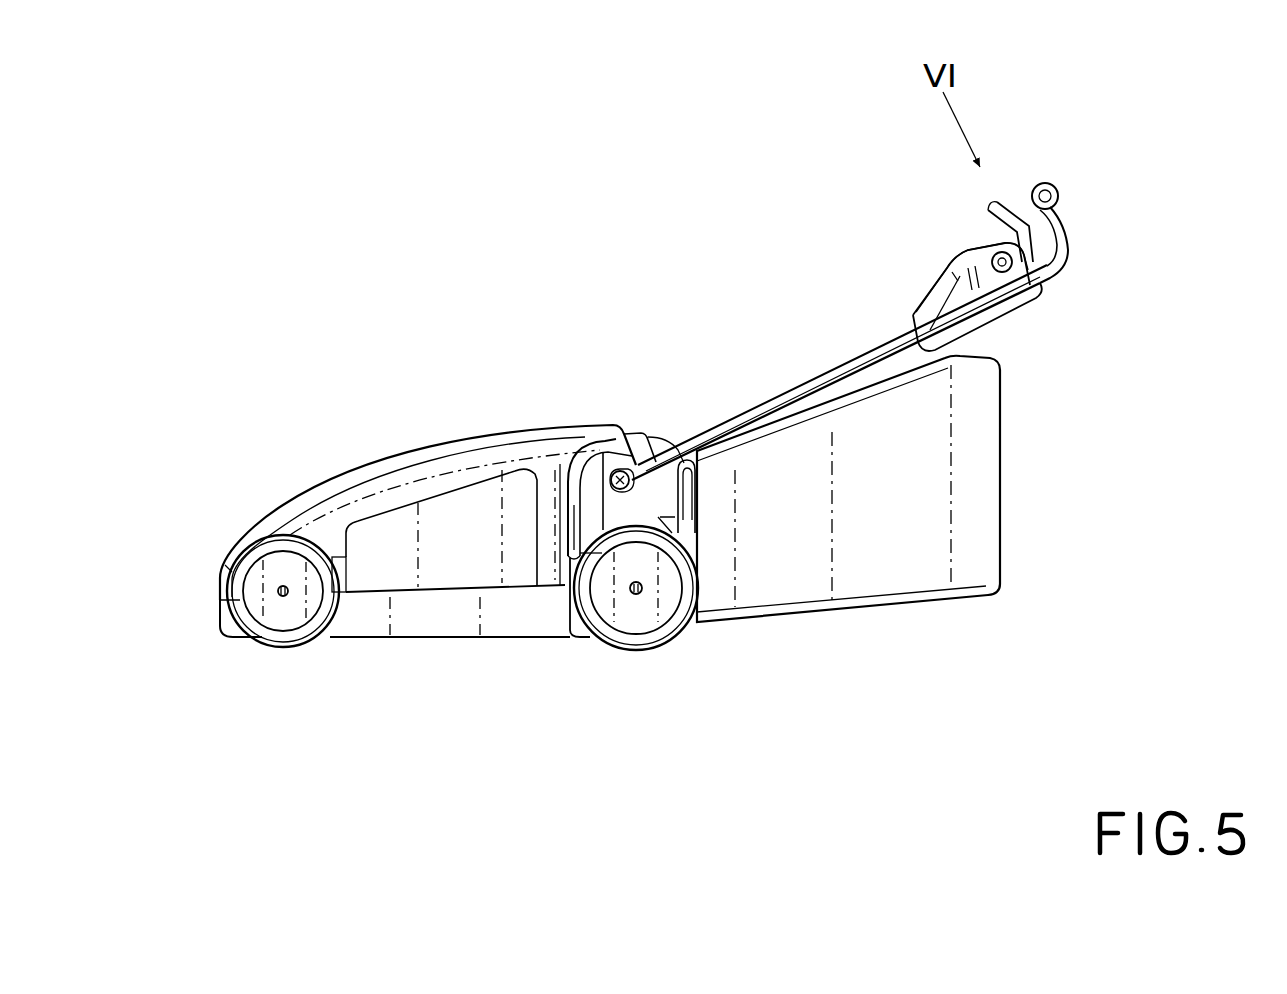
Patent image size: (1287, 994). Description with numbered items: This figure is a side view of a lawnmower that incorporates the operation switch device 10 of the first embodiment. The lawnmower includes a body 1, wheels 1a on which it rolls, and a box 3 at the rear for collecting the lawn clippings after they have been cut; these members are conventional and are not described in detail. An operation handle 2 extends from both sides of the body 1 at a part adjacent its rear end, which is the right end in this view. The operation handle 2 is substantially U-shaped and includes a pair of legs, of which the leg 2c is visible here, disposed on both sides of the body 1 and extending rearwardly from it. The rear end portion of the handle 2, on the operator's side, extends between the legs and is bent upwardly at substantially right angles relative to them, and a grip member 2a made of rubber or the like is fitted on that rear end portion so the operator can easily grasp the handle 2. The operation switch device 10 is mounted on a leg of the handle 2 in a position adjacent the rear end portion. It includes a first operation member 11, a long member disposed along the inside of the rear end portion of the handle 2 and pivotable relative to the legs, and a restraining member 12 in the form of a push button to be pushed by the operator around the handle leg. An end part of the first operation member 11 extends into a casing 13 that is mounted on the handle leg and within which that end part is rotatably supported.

The body 1 is at (453, 455).
The wheels 1a is at (282, 632).
The operation handle 2 is at (839, 372).
The leg 2c is at (817, 385).
The grip member 2a is at (1050, 183).
The box 3 is at (860, 573).
The operation switch device 10 is at (940, 258).
The first operation member 11 is at (997, 202).
The restraining member 12 is at (1003, 276).
The casing 13 is at (950, 298).